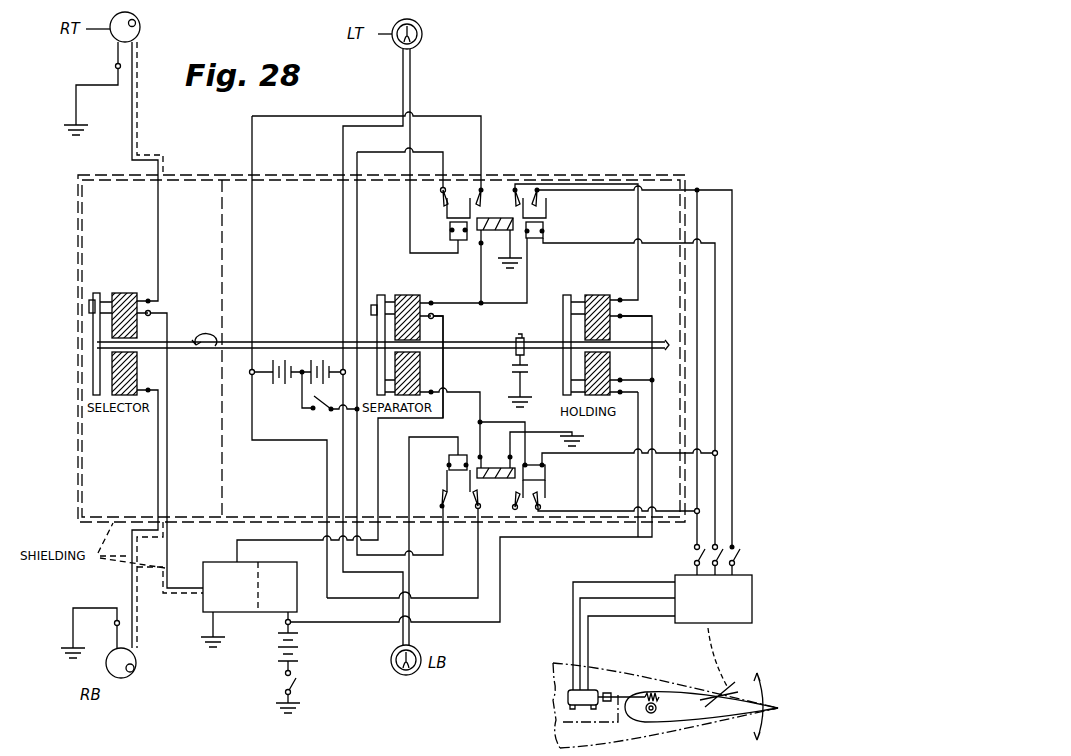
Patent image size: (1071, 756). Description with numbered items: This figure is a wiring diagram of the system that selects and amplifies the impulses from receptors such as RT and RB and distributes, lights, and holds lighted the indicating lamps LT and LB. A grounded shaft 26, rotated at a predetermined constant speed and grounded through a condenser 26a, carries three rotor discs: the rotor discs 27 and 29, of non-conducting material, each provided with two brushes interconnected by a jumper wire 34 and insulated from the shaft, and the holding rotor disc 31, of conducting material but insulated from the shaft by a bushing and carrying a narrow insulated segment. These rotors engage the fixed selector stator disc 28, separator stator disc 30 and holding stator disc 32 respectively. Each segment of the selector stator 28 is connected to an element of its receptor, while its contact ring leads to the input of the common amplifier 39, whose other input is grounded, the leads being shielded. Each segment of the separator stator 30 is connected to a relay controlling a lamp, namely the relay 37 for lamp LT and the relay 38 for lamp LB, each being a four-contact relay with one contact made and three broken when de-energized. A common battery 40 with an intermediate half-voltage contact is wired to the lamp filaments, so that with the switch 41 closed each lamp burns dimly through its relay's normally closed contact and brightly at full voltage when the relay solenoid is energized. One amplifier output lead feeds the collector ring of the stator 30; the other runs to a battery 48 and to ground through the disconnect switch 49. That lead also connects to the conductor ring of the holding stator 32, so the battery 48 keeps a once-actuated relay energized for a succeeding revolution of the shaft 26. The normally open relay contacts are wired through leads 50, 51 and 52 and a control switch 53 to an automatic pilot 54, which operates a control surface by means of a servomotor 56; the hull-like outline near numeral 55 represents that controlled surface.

The shaft 26 is at (273, 344).
The condenser 26a is at (503, 370).
The rotor disc 27 is at (96, 293).
The selector stator disc 28 is at (126, 293).
The rotor disc 29 is at (381, 295).
The separator stator disc 30 is at (406, 295).
The holding rotor disc 31 is at (566, 295).
The holding stator disc 32 is at (594, 295).
The jumper wire 34 is at (88, 307).
The relay 37 is at (481, 214).
The relay 38 is at (480, 482).
The amplifier 39 is at (250, 587).
The battery 40 is at (298, 380).
The switch 41 is at (325, 409).
The battery 48 is at (304, 642).
The disconnect switch 49 is at (303, 692).
The lead 50 is at (748, 331).
The lead 51 is at (588, 190).
The lead 52 is at (746, 426).
The control switch 53 is at (700, 561).
The automatic pilot 54 is at (743, 584).
The rudder 55 is at (715, 690).
The servomotor 56 is at (575, 690).